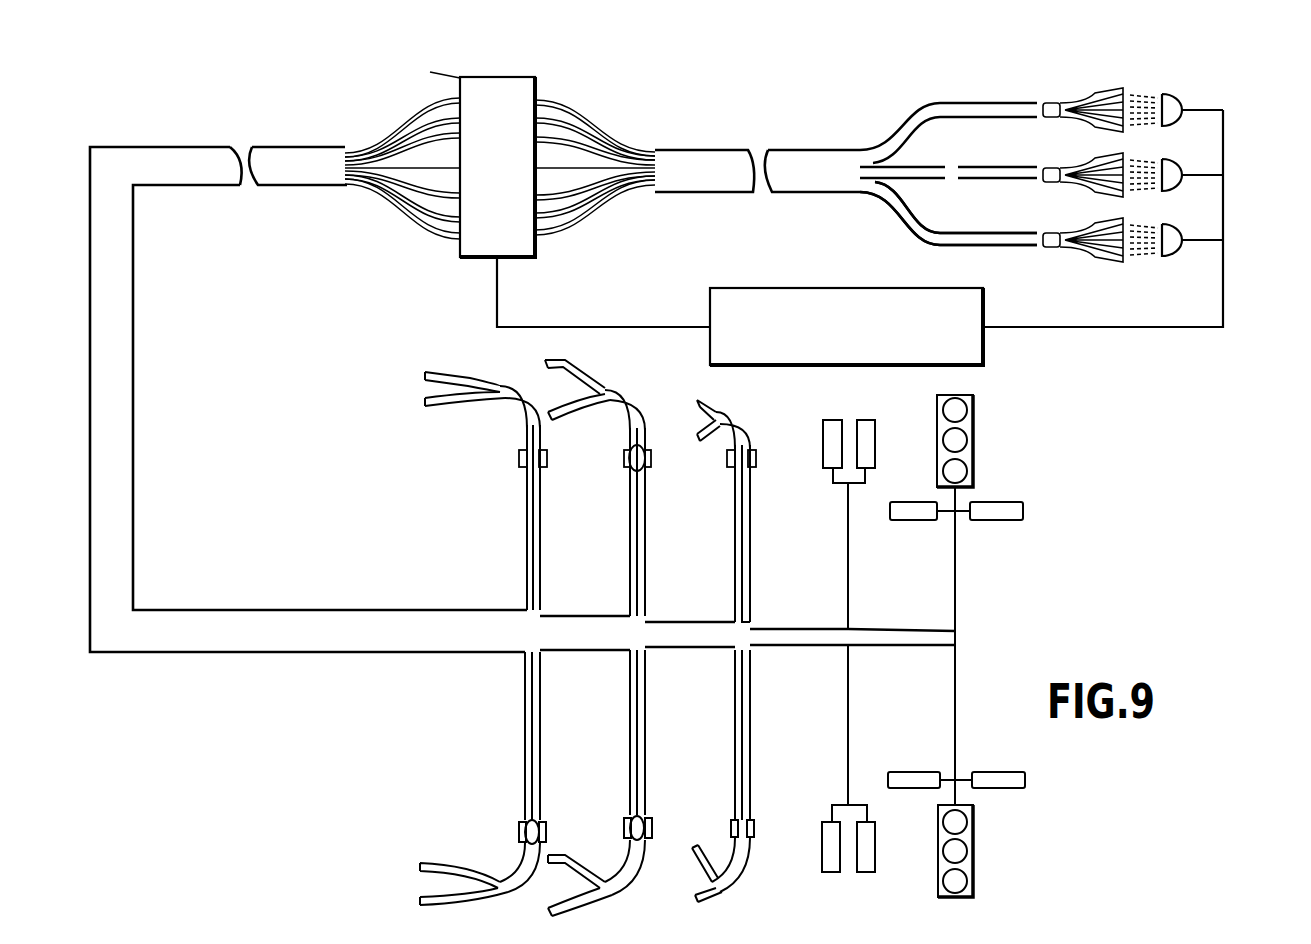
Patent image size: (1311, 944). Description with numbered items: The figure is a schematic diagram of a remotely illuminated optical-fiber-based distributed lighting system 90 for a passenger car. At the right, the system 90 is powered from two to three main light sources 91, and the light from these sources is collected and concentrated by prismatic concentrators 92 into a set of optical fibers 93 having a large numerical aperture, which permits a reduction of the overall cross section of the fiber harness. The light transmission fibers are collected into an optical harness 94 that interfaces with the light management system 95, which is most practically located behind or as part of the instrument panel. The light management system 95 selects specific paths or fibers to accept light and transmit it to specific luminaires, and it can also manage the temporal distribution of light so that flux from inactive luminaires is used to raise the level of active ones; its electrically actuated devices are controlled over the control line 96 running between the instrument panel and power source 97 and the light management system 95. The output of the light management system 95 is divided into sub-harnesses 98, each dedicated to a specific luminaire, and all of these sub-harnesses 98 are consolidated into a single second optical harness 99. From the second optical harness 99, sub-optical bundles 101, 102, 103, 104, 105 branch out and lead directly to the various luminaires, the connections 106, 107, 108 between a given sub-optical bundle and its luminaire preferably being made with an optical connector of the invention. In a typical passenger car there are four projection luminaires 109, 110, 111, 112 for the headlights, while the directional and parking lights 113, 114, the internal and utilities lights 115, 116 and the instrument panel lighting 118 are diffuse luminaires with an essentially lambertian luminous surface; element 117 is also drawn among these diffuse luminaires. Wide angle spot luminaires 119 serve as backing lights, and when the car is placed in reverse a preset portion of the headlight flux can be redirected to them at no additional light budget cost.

The remotely illuminated optical-fiber-based distributed lighting system 90 is at (206, 680).
The main light sources 91 is at (1185, 232).
The prismatic concentrators 92 is at (1078, 172).
The optical fibers 93 is at (930, 236).
The optical harness 94 is at (823, 167).
The light management system 95 is at (522, 180).
The control line 96 is at (497, 290).
The instrument panel and power source 97 is at (968, 350).
The sub-harnesses 98 is at (413, 165).
The second optical harness 99 is at (120, 470).
The sub-optical bundle 101 is at (527, 565).
The sub-optical bundle 102 is at (630, 570).
The sub-optical bundle 103 is at (735, 572).
The sub-optical bundle 104 is at (848, 575).
The sub-optical bundle 105 is at (957, 590).
The connection 106 is at (519, 458).
The connection 107 is at (624, 458).
The connection 108 is at (727, 458).
The projection luminaire 109 is at (450, 862).
The projection luminaire 110 is at (578, 855).
The projection luminaire 111 is at (445, 375).
The projection luminaire 112 is at (548, 362).
The directional and parking light 113 is at (823, 447).
The directional and parking light 114 is at (870, 452).
The internal and utilities light 115 is at (912, 522).
The internal and utilities light 116 is at (1027, 510).
The tail light cluster 117 is at (975, 440).
The instrument panel lighting 118 is at (970, 865).
The wide angle spot luminaires 119 is at (705, 405).